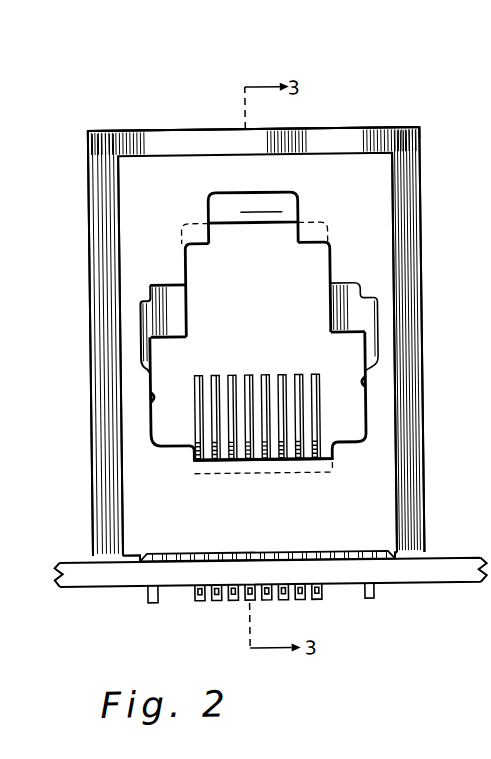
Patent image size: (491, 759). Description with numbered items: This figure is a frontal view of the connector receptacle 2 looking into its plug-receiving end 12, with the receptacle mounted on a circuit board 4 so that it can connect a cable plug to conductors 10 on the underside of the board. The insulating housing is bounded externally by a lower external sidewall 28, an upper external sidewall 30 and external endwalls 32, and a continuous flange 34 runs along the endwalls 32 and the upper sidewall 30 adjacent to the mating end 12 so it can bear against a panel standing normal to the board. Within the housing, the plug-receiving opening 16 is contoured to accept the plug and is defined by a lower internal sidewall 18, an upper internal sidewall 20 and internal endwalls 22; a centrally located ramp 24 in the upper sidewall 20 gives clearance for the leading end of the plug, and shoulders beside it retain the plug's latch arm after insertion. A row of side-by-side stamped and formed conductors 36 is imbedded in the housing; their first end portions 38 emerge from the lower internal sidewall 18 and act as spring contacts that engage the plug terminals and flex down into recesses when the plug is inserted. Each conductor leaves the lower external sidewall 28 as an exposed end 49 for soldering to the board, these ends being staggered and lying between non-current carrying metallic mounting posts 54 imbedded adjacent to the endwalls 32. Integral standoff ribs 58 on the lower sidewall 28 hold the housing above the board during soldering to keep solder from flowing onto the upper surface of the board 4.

The connector receptacle 2 is at (374, 86).
The circuit board 4 is at (450, 560).
The conductors 10 is at (193, 600).
The plug-receiving end 12 is at (389, 185).
The plug-receiving opening 16 is at (255, 315).
The lower internal sidewall 18 is at (281, 461).
The upper internal sidewall 20 is at (272, 223).
The internal endwalls 22 is at (152, 401).
The ramp 24 is at (259, 205).
The lower external sidewall 28 is at (178, 552).
The upper external sidewall 30 is at (162, 154).
The external endwalls 32 is at (394, 246).
The flange 34 is at (423, 140).
The conductors 36 is at (226, 368).
The first end portions 38 is at (282, 377).
The exposed end 49 is at (312, 601).
The mounting posts 54 is at (365, 604).
The standoff ribs 58 is at (128, 556).